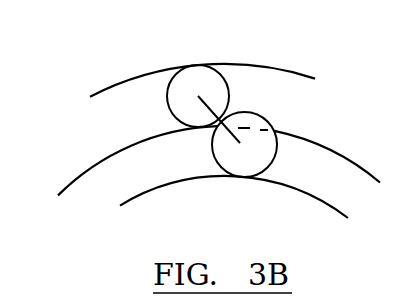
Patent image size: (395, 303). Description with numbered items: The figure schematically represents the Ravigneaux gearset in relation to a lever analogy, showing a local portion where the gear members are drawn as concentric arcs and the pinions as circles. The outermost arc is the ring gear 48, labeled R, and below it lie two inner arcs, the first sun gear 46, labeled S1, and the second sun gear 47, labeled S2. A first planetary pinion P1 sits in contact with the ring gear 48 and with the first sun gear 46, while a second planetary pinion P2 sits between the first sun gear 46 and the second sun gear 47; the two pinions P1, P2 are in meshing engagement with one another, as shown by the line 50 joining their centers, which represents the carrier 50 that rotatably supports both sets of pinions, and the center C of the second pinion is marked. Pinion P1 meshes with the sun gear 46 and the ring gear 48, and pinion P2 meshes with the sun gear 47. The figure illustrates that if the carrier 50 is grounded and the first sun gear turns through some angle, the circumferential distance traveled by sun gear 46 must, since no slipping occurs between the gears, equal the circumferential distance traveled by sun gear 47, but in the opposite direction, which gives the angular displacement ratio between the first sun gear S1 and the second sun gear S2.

The first sun gear 46 is at (80, 175).
The second sun gear 47 is at (157, 188).
The ring gear 48 is at (132, 78).
The carrier 50 is at (225, 112).
The first planetary pinion P1 is at (214, 96).
The second planetary pinion P2 is at (261, 144).
The carrier C is at (254, 157).
The ring gear R is at (81, 99).
The Sun 1 S1 is at (46, 197).
The Sun 2 S2 is at (109, 207).